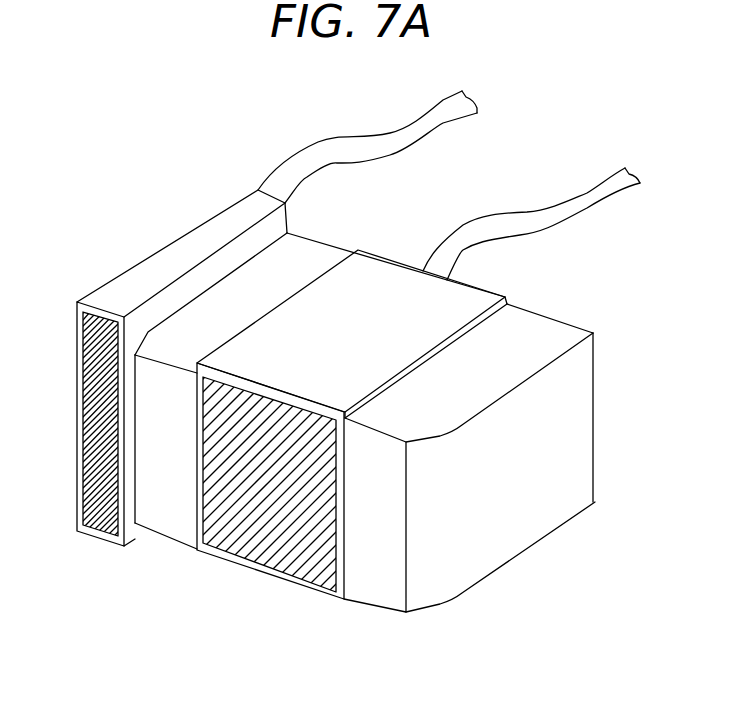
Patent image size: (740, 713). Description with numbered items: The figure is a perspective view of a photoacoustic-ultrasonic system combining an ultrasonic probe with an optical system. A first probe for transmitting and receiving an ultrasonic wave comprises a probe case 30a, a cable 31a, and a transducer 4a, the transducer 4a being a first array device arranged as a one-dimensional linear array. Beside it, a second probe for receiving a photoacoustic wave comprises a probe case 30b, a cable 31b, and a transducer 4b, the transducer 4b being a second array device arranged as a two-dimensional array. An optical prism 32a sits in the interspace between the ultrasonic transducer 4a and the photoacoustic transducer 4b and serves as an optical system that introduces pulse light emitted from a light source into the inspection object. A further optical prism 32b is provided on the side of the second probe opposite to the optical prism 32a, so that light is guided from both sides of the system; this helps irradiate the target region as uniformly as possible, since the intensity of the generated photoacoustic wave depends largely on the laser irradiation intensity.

The probe case 30a is at (133, 280).
The probe case 30b is at (377, 263).
The cable 31a is at (305, 157).
The cable 31b is at (592, 207).
The optical prism 32a is at (172, 522).
The optical prism 32b is at (377, 588).
The transducer 4a is at (102, 522).
The transducer 4b is at (262, 571).